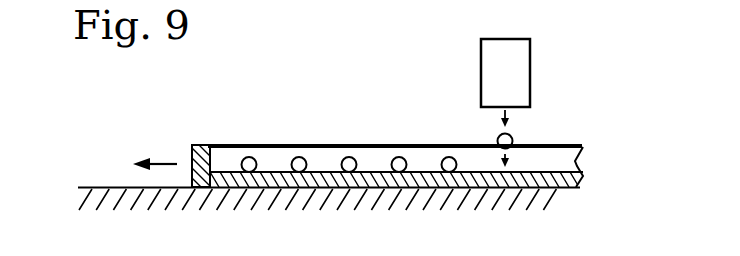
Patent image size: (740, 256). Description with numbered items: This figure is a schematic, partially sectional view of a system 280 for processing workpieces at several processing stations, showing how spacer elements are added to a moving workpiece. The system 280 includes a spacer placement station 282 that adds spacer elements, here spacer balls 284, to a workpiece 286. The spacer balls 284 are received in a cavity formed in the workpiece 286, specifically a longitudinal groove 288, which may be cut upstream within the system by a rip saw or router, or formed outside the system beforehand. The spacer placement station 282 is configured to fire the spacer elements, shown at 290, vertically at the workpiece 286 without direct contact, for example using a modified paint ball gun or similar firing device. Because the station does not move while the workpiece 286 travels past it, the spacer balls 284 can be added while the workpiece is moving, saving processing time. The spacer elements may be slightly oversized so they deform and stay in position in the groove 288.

The system 280 is at (309, 84).
The spacer placement station 282 is at (466, 67).
The spacer balls 284 is at (498, 137).
The workpiece 286 is at (190, 158).
The longitudinal groove 288 is at (560, 172).
The spacer element being fired 290 is at (535, 133).